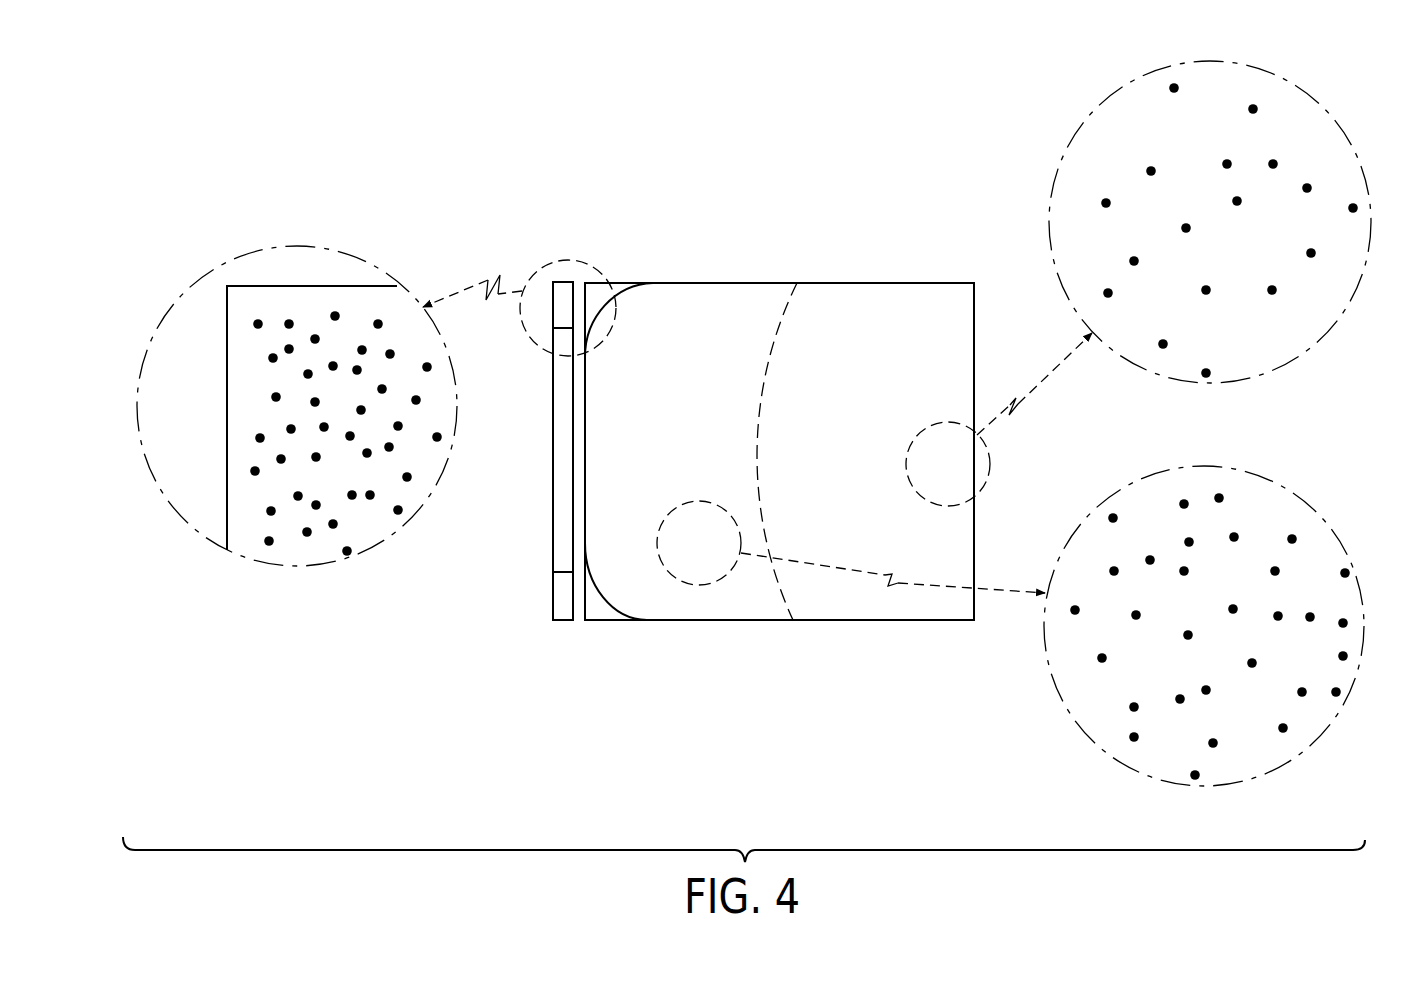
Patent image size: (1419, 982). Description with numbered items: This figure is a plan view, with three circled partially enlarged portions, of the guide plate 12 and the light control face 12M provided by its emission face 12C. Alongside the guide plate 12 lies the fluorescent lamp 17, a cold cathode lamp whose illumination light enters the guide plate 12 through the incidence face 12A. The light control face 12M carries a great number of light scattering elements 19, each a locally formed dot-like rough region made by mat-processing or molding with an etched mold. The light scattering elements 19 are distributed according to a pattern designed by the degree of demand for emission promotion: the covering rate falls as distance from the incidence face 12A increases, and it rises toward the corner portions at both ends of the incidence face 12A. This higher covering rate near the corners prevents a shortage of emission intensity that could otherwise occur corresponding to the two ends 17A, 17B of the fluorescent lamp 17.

The guide plate 12 is at (718, 607).
The incidence face 12A is at (585, 439).
The emission face 12C is at (830, 607).
The light control face 12M is at (687, 298).
The fluorescent lamp 17 is at (561, 531).
The end of the fluorescent lamp 17A is at (565, 608).
The end of the fluorescent lamp 17B is at (565, 290).
The light scattering element 19 is at (437, 437).